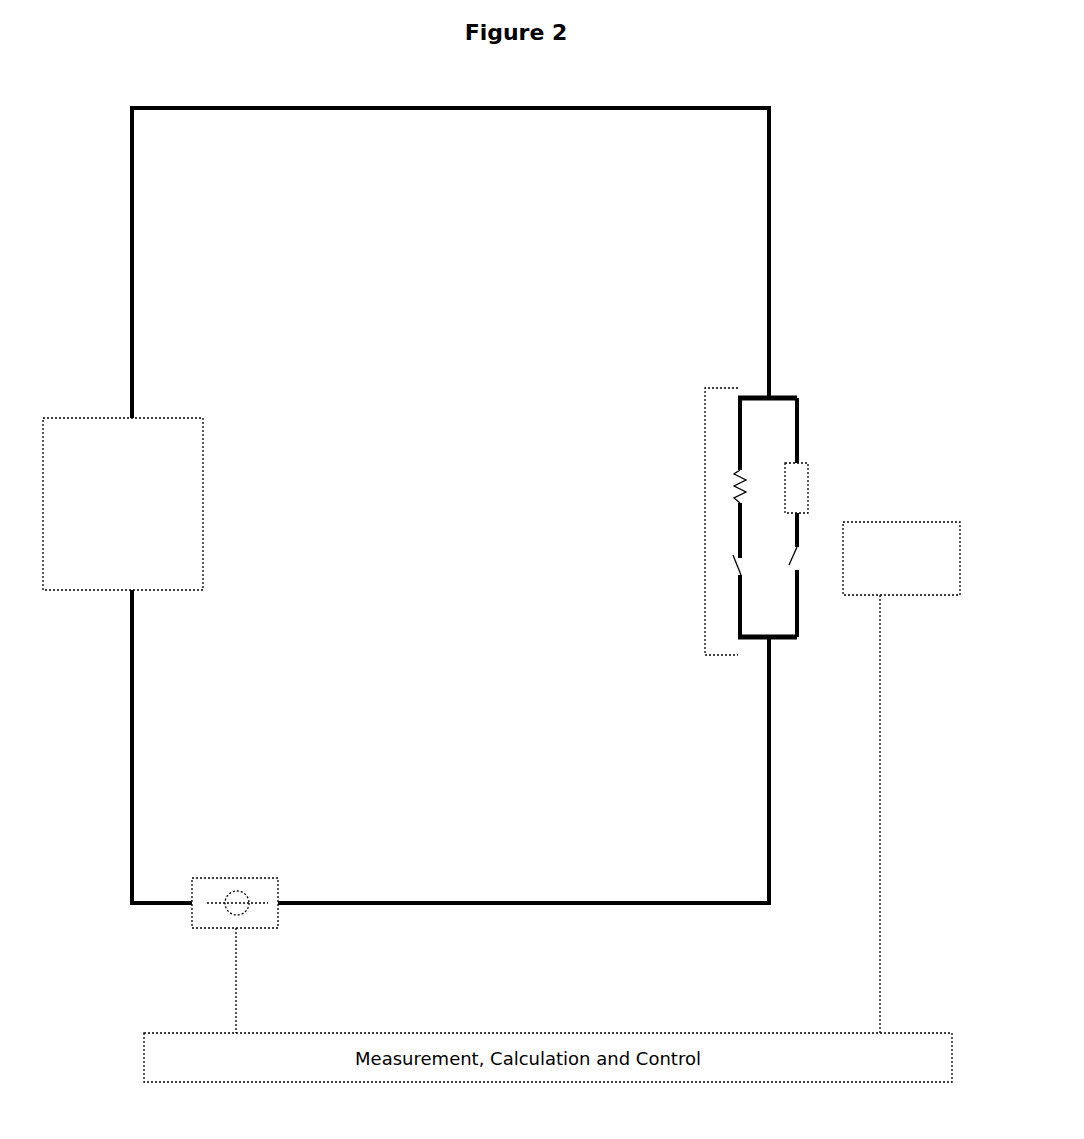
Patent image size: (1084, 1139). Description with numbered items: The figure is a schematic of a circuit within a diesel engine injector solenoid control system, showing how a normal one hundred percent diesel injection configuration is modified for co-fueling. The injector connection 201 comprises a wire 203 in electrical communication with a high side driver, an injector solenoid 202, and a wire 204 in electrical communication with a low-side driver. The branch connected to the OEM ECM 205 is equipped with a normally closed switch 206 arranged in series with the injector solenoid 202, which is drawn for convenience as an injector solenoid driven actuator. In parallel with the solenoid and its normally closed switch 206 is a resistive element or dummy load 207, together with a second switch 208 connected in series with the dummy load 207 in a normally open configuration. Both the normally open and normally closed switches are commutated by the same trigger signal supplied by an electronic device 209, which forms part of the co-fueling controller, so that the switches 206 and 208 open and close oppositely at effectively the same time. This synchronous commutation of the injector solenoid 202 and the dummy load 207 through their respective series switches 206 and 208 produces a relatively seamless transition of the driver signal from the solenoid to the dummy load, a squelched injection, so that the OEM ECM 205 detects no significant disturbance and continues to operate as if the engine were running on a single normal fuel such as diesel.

The injector connection 201 is at (704, 516).
The injector solenoid 202 is at (735, 483).
The wire 203 is at (782, 202).
The wire 204 is at (778, 772).
The OEM ECM 205 is at (75, 416).
The normally closed switch 206 is at (730, 567).
The dummy load 207 is at (820, 485).
The second switch 208 is at (806, 570).
The electronic device 209 is at (943, 520).